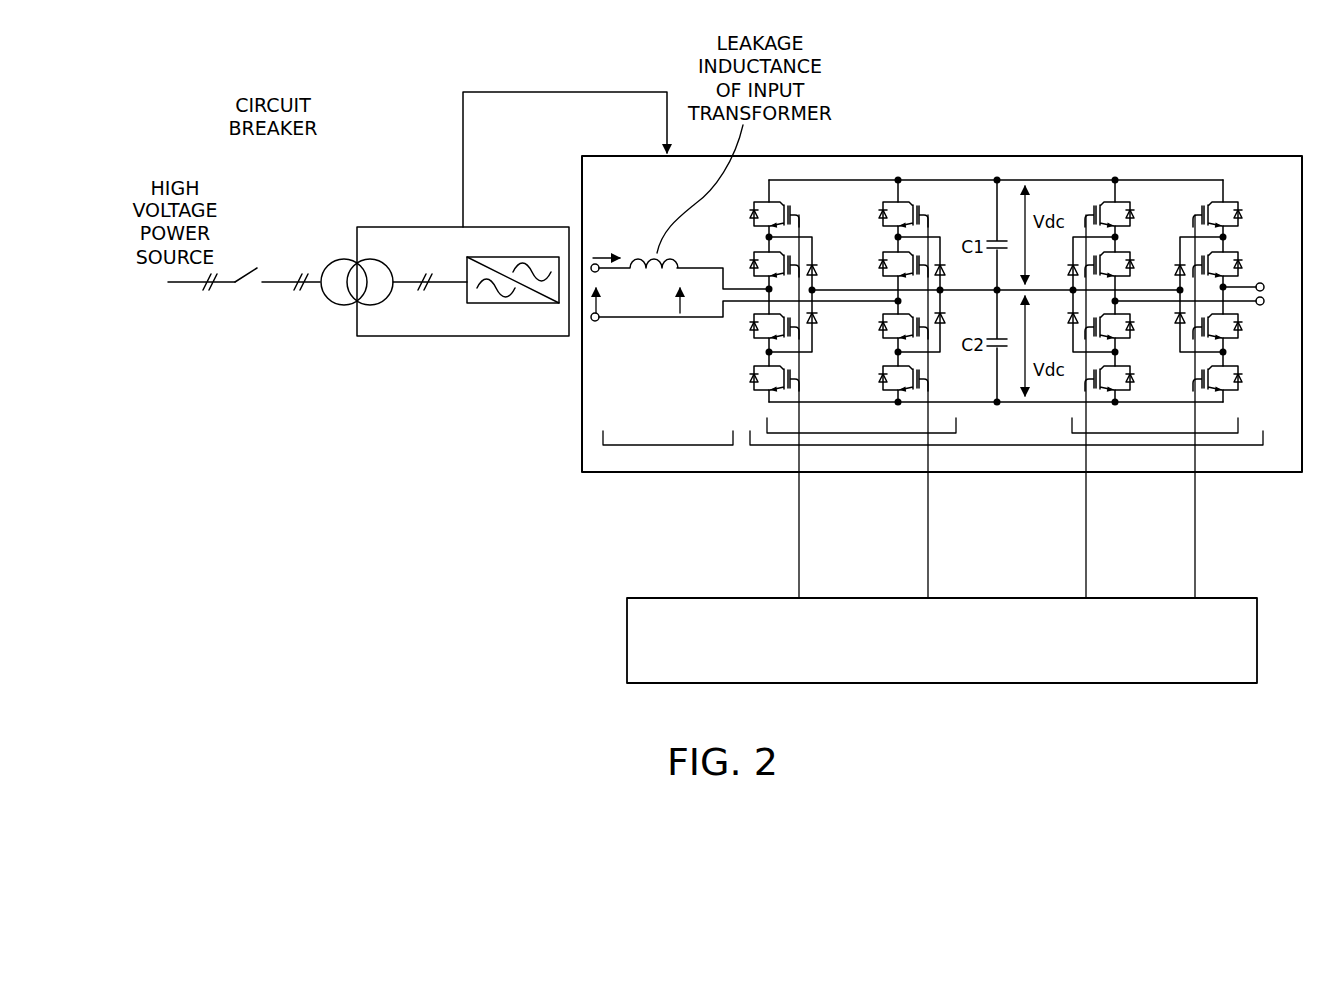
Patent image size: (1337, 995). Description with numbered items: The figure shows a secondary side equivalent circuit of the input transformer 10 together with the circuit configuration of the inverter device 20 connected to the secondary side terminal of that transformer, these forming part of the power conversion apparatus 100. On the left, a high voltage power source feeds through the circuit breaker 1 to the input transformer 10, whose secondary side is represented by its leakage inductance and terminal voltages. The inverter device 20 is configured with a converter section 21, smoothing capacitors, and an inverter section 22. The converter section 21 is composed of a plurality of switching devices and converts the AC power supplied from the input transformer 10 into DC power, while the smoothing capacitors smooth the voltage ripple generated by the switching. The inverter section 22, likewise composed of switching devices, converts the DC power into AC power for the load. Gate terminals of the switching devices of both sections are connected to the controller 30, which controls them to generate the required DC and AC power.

The circuit breaker 1 is at (272, 250).
The input transformer 10 is at (339, 318).
The inverter device 20 is at (511, 319).
The converter section 21 is at (878, 440).
The inverter section 22 is at (1145, 440).
The controller 30 is at (934, 683).
The power conversion apparatus 100 is at (983, 152).